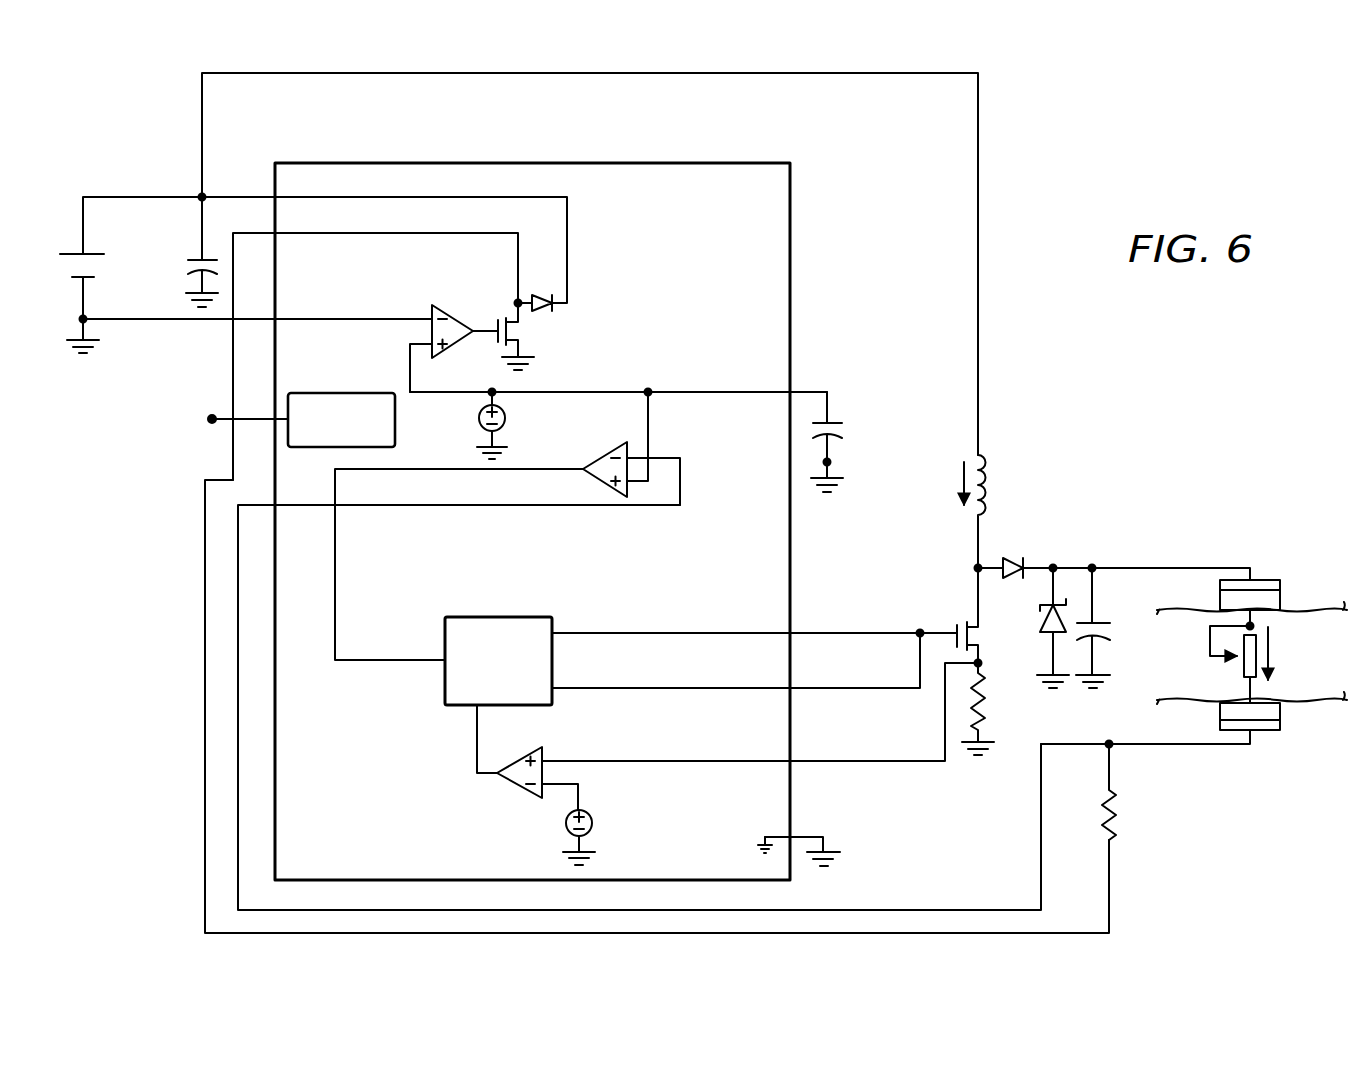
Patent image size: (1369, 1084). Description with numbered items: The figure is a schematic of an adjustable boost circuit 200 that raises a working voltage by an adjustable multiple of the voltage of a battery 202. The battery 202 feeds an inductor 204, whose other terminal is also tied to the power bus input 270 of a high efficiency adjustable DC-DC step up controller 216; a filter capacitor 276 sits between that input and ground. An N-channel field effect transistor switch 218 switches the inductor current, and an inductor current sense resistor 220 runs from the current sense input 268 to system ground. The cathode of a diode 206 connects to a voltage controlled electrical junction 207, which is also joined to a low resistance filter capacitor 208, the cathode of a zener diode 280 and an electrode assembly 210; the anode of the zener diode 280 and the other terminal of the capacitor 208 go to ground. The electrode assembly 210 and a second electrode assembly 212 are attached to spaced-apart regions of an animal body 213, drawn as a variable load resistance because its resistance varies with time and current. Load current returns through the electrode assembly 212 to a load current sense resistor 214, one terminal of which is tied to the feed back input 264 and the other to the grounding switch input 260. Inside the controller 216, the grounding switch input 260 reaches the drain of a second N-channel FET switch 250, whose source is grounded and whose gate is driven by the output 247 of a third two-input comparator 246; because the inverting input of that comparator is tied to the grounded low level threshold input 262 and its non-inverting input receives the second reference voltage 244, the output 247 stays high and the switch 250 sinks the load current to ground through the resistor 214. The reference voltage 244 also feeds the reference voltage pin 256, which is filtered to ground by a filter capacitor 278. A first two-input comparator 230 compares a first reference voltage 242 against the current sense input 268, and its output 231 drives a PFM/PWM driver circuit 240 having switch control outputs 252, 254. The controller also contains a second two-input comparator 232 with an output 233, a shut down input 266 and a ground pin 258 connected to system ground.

The adjustable boost circuit 200 is at (1022, 162).
The battery 202 is at (100, 268).
The inductor 204 is at (990, 471).
The diode 206 is at (1006, 555).
The voltage controlled electrical junction 207 is at (1056, 566).
The low resistance filter capacitor 208 is at (1110, 623).
The electrode assembly 210 is at (1268, 576).
The electrode assembly 212 is at (1271, 734).
The animal body 213 is at (1316, 607).
The load current sense resistor 214 is at (1118, 807).
The DC-DC step up controller 216 is at (796, 234).
The N-channel field effect transistor switch 218 is at (968, 621).
The inductor current sense resistor 220 is at (984, 700).
The first two-input comparator 230 is at (523, 753).
The output of first comparator 231 is at (497, 778).
The second two-input comparator 232 is at (606, 453).
The output of second comparator 233 is at (582, 470).
The PFM/PWM driver circuit 240 is at (501, 616).
The first reference voltage 242 is at (587, 810).
The second reference voltage 244 is at (478, 413).
The third two-input comparator 246 is at (445, 304).
The output of third comparator 247 is at (477, 322).
The second N-channel FET switch 250 is at (522, 339).
The switch control output 252 is at (786, 631).
The switch control output 254 is at (786, 686).
The reference voltage pin 256 is at (786, 391).
The ground pin 258 is at (765, 837).
The grounding switch input 260 is at (280, 233).
The low level threshold input 262 is at (280, 319).
The feed back input 264 is at (278, 502).
The shut down input 266 is at (345, 392).
The current sense input 268 is at (786, 759).
The power bus input 270 is at (280, 197).
The filter capacitor 276 is at (193, 259).
The filter capacitor 278 is at (843, 426).
The zener diode 280 is at (1042, 627).